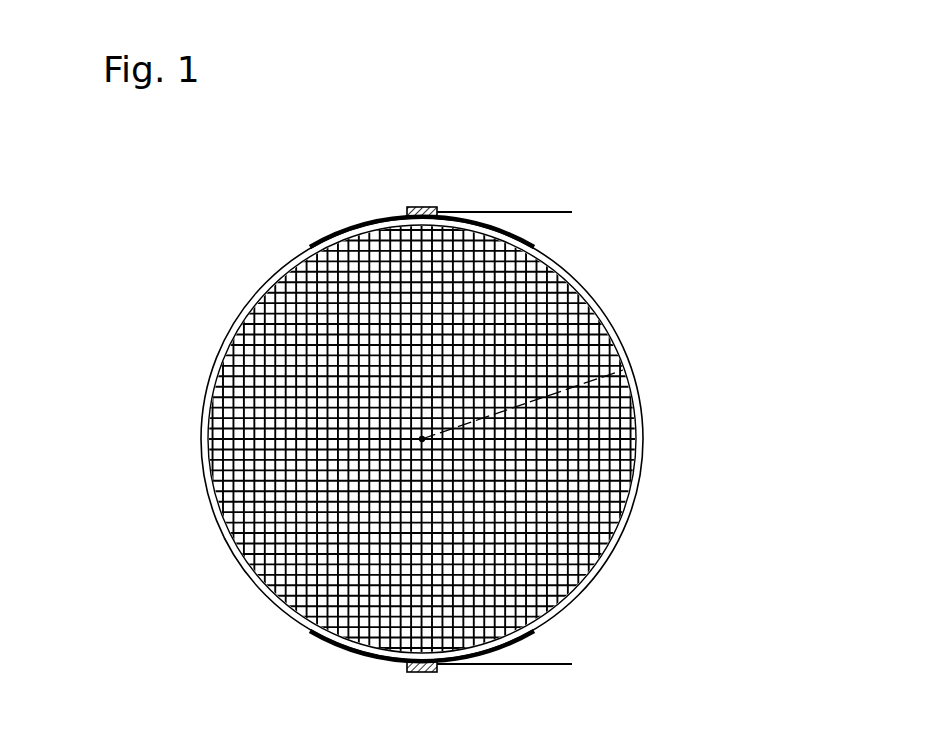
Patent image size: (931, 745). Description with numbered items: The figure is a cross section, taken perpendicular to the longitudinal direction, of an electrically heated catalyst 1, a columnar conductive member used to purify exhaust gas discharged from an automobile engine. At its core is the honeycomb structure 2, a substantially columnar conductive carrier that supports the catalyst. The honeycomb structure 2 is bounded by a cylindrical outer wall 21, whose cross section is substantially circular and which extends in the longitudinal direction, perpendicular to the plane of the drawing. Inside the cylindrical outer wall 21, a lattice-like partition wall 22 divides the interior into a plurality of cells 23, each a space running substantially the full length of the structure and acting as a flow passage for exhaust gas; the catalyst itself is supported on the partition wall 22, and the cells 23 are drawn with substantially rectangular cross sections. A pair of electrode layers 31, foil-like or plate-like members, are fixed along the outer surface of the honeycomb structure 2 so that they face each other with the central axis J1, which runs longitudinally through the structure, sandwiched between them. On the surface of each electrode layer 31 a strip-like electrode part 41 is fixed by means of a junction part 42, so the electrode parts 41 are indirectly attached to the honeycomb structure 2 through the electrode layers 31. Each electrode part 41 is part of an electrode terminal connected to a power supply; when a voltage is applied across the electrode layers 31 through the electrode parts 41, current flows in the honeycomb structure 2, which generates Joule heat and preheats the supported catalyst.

The electrically heated catalyst 1 is at (219, 167).
The honeycomb structure 2 is at (150, 309).
The cylindrical outer wall 21 is at (240, 318).
The partition wall 22 is at (262, 349).
The cells 23 is at (272, 401).
The central axis J1 is at (640, 370).
The electrode layers 31 is at (359, 222).
The electrode parts 41 is at (462, 208).
The junction part 42 is at (422, 207).